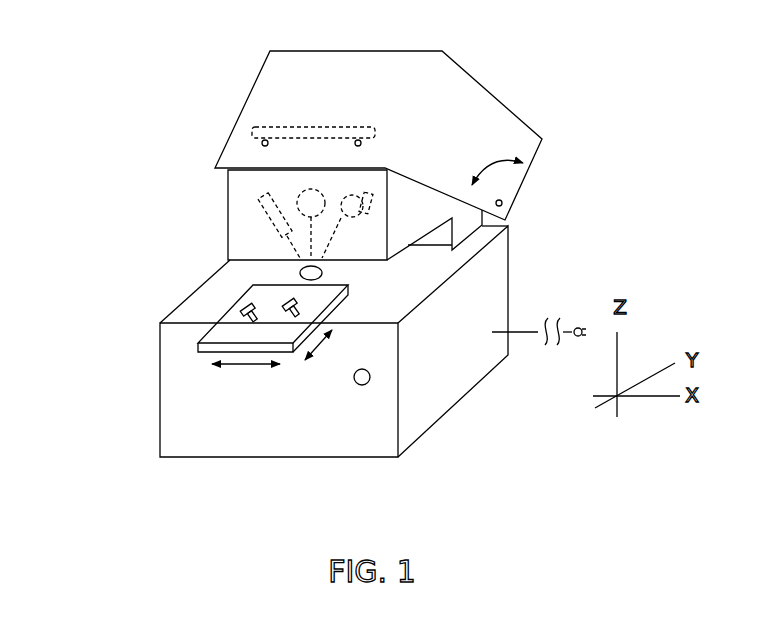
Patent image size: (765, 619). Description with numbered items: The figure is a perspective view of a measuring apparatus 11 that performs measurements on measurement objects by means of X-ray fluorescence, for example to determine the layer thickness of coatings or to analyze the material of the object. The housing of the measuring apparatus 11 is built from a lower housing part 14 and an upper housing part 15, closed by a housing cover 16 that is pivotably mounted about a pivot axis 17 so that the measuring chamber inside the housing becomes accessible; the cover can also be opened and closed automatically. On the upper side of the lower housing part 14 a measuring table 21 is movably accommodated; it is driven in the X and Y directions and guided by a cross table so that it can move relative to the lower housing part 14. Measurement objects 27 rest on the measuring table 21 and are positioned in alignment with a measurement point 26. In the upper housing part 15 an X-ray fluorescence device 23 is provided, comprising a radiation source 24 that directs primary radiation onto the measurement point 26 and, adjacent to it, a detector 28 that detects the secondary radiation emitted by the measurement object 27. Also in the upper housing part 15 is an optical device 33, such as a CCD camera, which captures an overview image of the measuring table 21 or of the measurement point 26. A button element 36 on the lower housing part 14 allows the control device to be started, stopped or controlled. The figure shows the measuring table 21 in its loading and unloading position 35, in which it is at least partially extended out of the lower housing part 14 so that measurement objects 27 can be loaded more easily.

The measuring apparatus 11 is at (360, 266).
The lower housing part 14 is at (180, 447).
The upper housing part 15 is at (228, 217).
The housing cover 16 is at (502, 130).
The pivot axis 17 is at (505, 203).
The measuring table 21 is at (195, 346).
The X-ray fluorescence device 23 is at (248, 228).
The radiation source 24 is at (297, 193).
The measurement point 26 is at (298, 273).
The measurement objects 27 is at (232, 320).
The detector 28 is at (257, 201).
The optical device 33 is at (355, 217).
The loading and unloading position 35 is at (192, 362).
The button element 36 is at (357, 385).